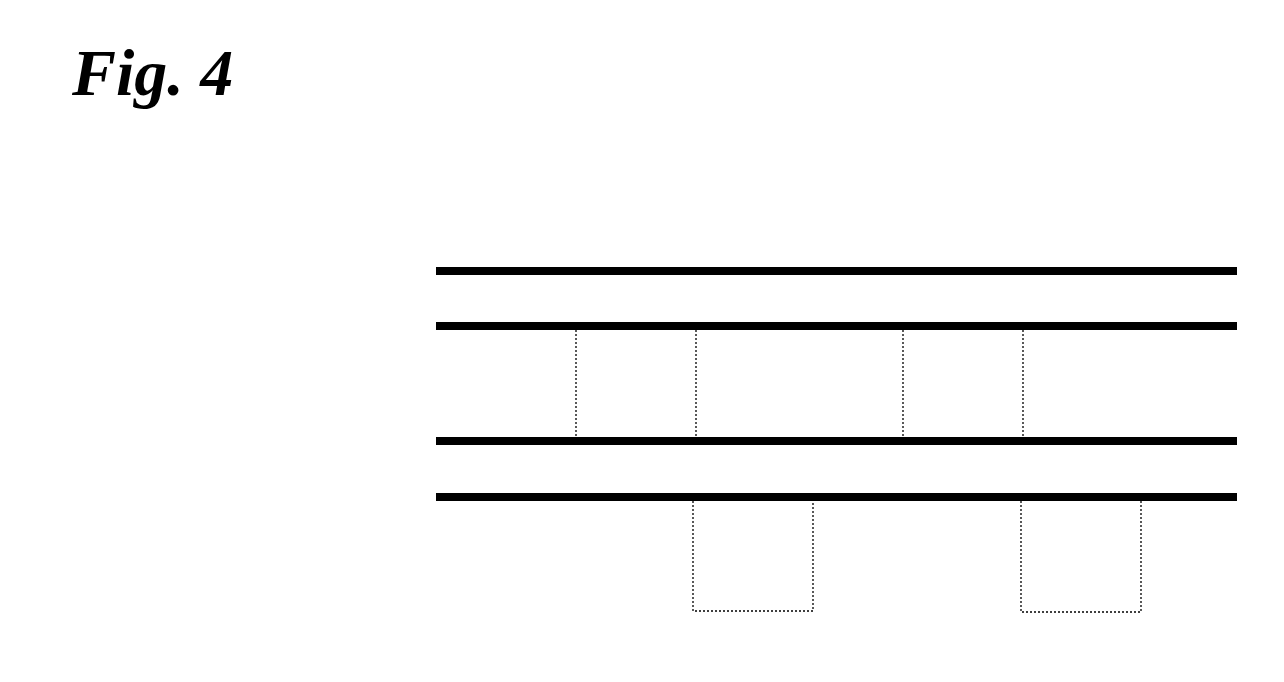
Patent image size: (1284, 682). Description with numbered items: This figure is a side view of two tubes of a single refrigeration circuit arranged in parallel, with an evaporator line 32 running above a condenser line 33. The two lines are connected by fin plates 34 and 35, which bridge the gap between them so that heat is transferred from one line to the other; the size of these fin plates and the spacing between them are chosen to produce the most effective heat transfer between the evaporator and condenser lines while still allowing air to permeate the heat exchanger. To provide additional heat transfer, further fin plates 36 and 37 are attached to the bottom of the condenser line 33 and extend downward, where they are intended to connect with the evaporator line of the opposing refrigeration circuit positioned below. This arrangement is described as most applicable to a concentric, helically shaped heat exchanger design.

The evaporator line 32 is at (482, 268).
The condenser line 33 is at (482, 502).
The fin plate 34 is at (658, 400).
The fin plate 35 is at (985, 403).
The fin plate 36 is at (773, 571).
The fin plate 37 is at (1109, 572).